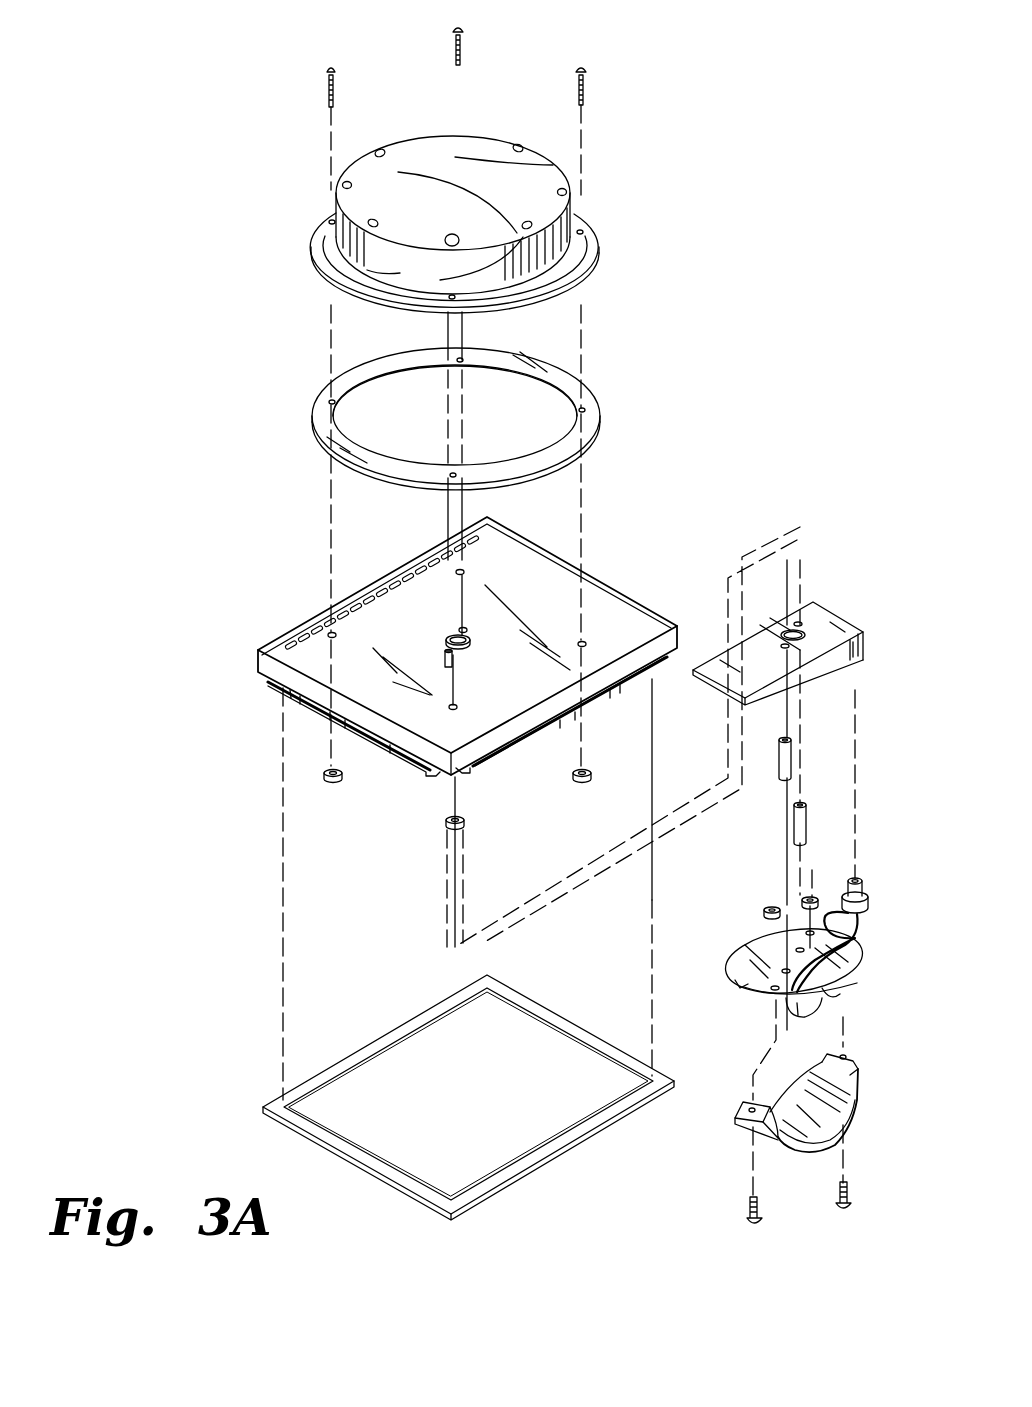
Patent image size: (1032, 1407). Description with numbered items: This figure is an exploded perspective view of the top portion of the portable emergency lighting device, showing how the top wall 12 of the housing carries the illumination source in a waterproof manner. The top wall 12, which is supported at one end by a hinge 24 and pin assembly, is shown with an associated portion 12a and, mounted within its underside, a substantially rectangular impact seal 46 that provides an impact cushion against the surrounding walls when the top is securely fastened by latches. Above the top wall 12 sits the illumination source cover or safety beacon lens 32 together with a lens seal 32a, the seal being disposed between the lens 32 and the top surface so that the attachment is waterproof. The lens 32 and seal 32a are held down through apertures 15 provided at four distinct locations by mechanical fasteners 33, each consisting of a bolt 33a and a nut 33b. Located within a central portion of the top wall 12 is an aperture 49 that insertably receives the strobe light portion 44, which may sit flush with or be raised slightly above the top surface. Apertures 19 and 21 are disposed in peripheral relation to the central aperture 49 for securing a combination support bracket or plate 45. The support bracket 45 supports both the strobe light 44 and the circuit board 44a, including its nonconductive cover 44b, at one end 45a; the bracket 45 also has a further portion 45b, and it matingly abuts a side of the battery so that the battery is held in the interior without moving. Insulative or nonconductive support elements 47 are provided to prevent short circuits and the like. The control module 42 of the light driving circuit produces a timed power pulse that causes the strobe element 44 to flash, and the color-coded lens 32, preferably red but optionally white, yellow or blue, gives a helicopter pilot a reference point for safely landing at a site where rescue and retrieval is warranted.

The fasteners 33 is at (518, 76).
The bolt 33a is at (586, 86).
The nut 33b is at (593, 769).
The safety beacon lens 32 is at (560, 173).
The lens seal 32a is at (590, 397).
The hinge 24 is at (296, 618).
The top wall 12 is at (564, 597).
The channel 12a is at (700, 612).
The apertures 15 is at (463, 571).
The aperture 19 is at (465, 630).
The central aperture 49 is at (446, 639).
The aperture 21 is at (452, 656).
The support bracket 45 is at (807, 604).
The end of support bracket 45a is at (796, 652).
The bracket flange 45b is at (866, 646).
The nonconductive support elements 47 is at (807, 822).
The strobe light 44 is at (862, 884).
The circuit board 44a is at (853, 957).
The control module 42 is at (843, 1003).
The nonconductive cover 44b is at (863, 1113).
The impact seal 46 is at (542, 1151).